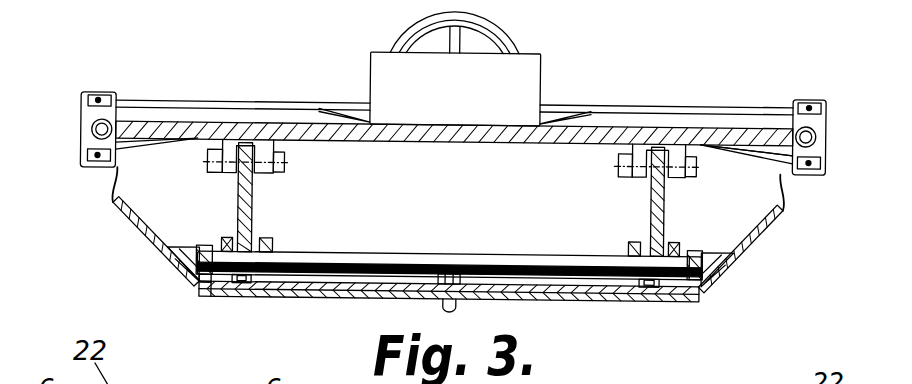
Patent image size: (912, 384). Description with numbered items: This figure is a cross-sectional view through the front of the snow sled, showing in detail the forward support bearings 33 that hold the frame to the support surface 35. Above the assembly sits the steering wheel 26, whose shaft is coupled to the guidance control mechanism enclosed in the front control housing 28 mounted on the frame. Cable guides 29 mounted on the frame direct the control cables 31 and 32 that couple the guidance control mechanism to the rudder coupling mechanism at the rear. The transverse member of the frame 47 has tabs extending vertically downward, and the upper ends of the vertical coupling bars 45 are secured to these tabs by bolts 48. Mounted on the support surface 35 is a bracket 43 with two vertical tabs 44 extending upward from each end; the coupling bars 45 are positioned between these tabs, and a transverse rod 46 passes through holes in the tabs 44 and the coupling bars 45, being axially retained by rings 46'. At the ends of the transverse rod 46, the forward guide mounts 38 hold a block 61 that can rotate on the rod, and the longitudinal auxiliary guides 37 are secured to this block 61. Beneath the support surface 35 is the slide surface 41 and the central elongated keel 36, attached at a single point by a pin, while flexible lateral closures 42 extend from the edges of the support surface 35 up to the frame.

The steering wheel 26 is at (512, 41).
The front control housing 28 is at (540, 78).
The cable guides 29 is at (78, 132).
The control cable 31 is at (742, 156).
The control cable 32 is at (672, 107).
The front support bearings 33 is at (608, 205).
The support surface 35 is at (200, 292).
The central elongated keel 36 is at (457, 307).
The longitudinal auxiliary guides 37 is at (130, 222).
The forward guide mounts 38 is at (203, 223).
The slide surface 41 is at (240, 298).
The flexible lateral closures 42 is at (108, 178).
The bracket 43 is at (341, 294).
The vertical tabs 44 is at (275, 242).
The vertical coupling bars 45 is at (253, 203).
The transverse rod 46 is at (418, 243).
The rings 46' is at (428, 292).
The transverse member of the frame 47 is at (413, 143).
The bolts 48 is at (285, 165).
The block 61 is at (708, 262).